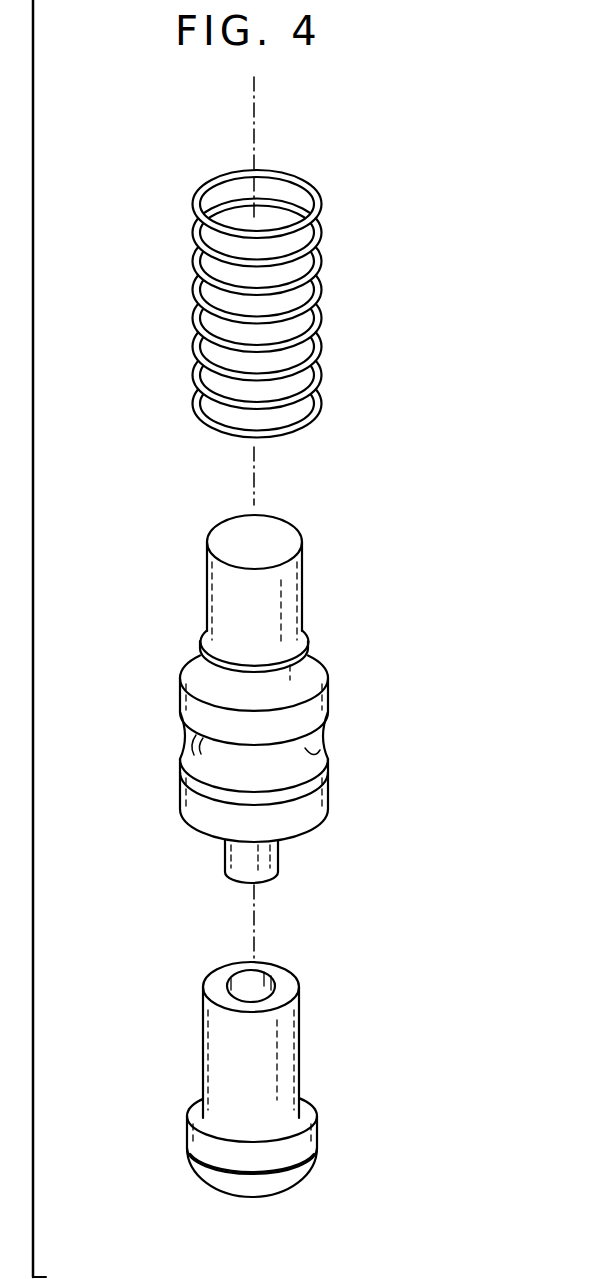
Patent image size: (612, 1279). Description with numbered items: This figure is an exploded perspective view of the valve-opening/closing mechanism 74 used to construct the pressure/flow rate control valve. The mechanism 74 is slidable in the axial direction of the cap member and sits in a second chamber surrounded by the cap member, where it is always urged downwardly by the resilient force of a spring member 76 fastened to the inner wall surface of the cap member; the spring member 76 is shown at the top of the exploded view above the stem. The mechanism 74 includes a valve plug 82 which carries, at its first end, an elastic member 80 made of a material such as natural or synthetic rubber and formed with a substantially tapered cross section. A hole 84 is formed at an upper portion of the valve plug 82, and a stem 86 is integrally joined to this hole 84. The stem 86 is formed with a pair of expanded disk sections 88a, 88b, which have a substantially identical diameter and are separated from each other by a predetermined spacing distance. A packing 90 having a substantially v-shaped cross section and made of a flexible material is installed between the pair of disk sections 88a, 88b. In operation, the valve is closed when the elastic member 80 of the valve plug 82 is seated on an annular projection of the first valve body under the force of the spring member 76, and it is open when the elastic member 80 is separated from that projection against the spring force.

The valve-opening/closing mechanism 74 is at (347, 699).
The spring member 76 is at (323, 288).
The elastic member 80 is at (272, 1183).
The valve plug 82 is at (285, 1057).
The hole 84 is at (262, 975).
The stem 86 is at (303, 607).
The disk section 88a is at (320, 703).
The disk section 88b is at (318, 803).
The packing 90 is at (311, 737).